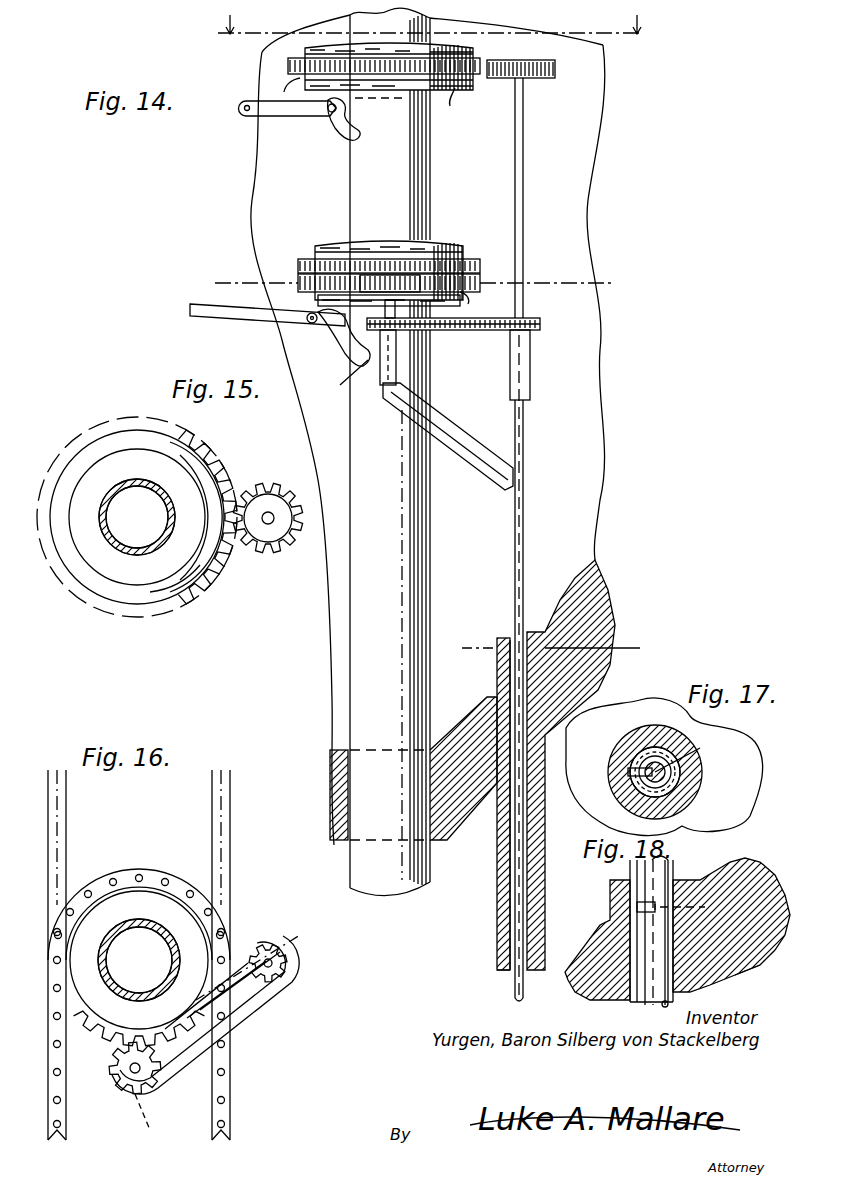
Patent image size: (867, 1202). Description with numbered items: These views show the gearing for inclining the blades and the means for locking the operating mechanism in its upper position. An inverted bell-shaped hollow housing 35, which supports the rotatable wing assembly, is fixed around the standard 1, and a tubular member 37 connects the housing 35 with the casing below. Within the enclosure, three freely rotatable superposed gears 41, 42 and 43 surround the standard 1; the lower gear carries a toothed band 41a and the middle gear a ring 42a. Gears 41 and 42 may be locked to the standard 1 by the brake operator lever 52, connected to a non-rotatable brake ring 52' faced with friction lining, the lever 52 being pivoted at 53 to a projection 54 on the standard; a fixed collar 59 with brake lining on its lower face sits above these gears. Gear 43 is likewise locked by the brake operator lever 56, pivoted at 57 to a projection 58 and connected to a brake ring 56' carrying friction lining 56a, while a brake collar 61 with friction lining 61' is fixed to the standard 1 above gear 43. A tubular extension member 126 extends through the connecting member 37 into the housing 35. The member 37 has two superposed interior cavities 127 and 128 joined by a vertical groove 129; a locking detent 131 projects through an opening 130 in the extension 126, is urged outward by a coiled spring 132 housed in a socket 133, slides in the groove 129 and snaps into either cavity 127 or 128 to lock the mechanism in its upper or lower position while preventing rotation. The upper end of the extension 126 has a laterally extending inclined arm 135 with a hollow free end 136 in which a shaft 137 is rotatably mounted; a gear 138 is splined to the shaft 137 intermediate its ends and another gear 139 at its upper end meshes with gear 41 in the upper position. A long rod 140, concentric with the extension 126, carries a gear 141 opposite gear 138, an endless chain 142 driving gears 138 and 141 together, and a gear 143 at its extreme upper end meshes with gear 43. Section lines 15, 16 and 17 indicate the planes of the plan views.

In FIG. 14, the standard 1 is at (358, 655).
In FIG. 15, the standard 1 is at (120, 499).
In FIG. 14, the section line 15— 15 is at (430, 32).
In FIG. 14, the section line 16— 16 is at (410, 285).
In FIG. 14, the section line 17— 17 is at (550, 651).
In FIG. 14, the housing 35 is at (591, 616).
In FIG. 17, the housing 35 is at (740, 756).
In FIG. 18, the housing 35 is at (740, 882).
In FIG. 14, the tubular member 37 is at (500, 906).
In FIG. 14, the gear 41 is at (470, 287).
In FIG. 16, the gear 41 is at (93, 1031).
In FIG. 14, the ratchet band 41a is at (318, 303).
In FIG. 14, the gear 42 is at (322, 262).
In FIG. 14, the toothed ring 42a is at (465, 256).
In FIG. 14, the gear 43 is at (337, 62).
In FIG. 15, the gear 43 is at (200, 463).
In FIG. 14, the brake operator lever 52 is at (267, 325).
In FIG. 14, the brake ring 52' is at (437, 315).
In FIG. 14, the pivot 53 is at (309, 326).
In FIG. 14, the projection 54 is at (341, 352).
In FIG. 14, the brake operator lever 56 is at (277, 95).
In FIG. 14, the friction lining 56a is at (300, 78).
In FIG. 14, the brake ring 56' is at (466, 109).
In FIG. 14, the pivot 57 is at (326, 113).
In FIG. 14, the projection 58 is at (345, 137).
In FIG. 14, the fixed collar 59 is at (438, 251).
In FIG. 14, the brake collar 61 is at (384, 39).
In FIG. 15, the brake collar 61 is at (186, 546).
In FIG. 14, the friction lining 61' is at (474, 48).
In FIG. 14, the tubular extension member 126 is at (521, 553).
In FIG. 17, the tubular extension member 126 is at (643, 777).
In FIG. 18, the tubular extension member 126 is at (680, 980).
In FIG. 14, the cavity 127 is at (500, 639).
In FIG. 17, the cavity 127 is at (646, 766).
In FIG. 18, the cavity 127 is at (634, 905).
In FIG. 14, the cavity 128 is at (497, 790).
In FIG. 14, the groove 129 is at (510, 697).
In FIG. 18, the groove 129 is at (612, 946).
In FIG. 18, the opening 130 is at (626, 880).
In FIG. 18, the locking detent 131 is at (642, 912).
In FIG. 18, the coiled spring 132 is at (676, 892).
In FIG. 18, the socket 133 is at (720, 935).
In FIG. 14, the inclined arm 135 is at (447, 436).
In FIG. 14, the free end 136 is at (396, 366).
In FIG. 14, the shaft 137 is at (393, 337).
In FIG. 14, the gear 138 is at (342, 382).
In FIG. 16, the gear 138 is at (155, 1120).
In FIG. 14, the gear 139 is at (380, 292).
In FIG. 16, the gear 139 is at (118, 1081).
In FIG. 14, the rod 140 is at (520, 316).
In FIG. 17, the rod 140 is at (690, 750).
In FIG. 18, the rod 140 is at (640, 1001).
In FIG. 14, the gear 141 is at (540, 329).
In FIG. 16, the gear 141 is at (271, 963).
In FIG. 14, the endless chain 142 is at (473, 332).
In FIG. 16, the endless chain 142 is at (265, 1004).
In FIG. 14, the gear 143 is at (537, 60).
In FIG. 15, the gear 143 is at (262, 499).